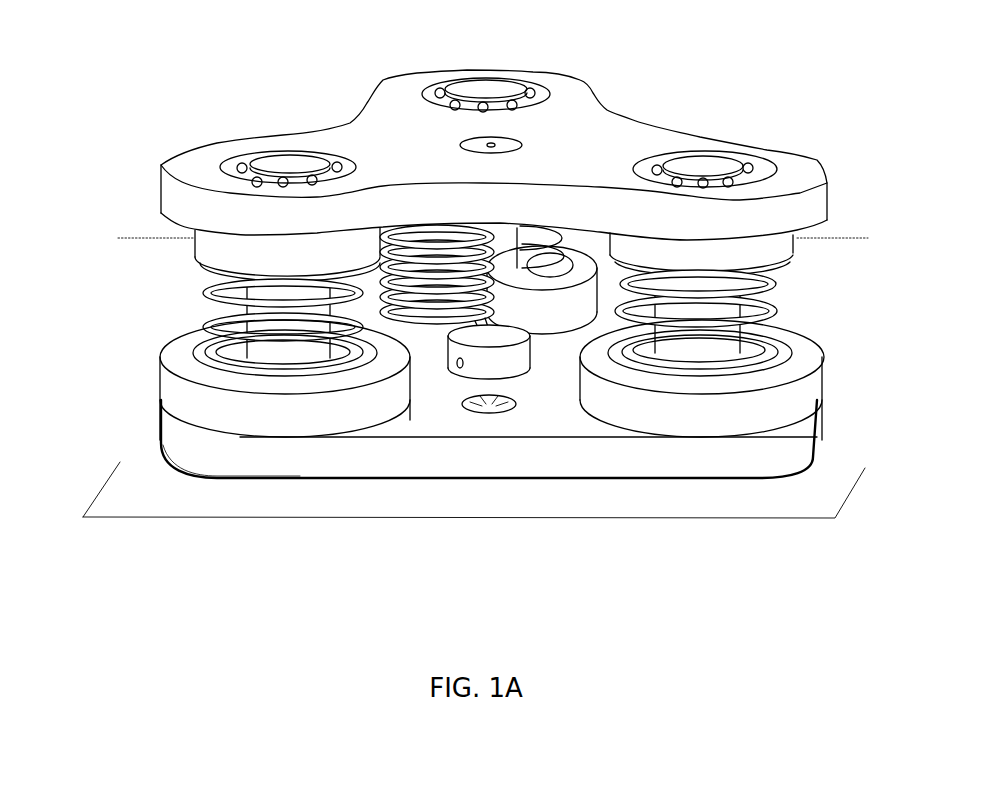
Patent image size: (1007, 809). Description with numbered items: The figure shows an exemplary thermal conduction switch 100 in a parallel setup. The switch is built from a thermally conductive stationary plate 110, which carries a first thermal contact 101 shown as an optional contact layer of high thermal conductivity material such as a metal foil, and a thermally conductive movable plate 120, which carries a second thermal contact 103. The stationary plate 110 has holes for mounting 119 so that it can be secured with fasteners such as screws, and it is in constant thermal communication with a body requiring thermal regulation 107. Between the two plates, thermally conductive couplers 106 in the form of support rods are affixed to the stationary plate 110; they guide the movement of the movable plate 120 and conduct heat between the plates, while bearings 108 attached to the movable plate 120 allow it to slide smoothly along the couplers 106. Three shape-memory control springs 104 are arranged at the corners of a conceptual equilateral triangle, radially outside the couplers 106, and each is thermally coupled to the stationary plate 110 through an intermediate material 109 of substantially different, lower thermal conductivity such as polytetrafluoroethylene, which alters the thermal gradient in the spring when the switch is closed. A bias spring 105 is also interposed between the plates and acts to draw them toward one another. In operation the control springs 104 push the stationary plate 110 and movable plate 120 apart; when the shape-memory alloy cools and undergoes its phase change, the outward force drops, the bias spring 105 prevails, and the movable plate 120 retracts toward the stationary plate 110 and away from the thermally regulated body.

The thermal conduction switch 100 is at (203, 78).
The first thermal contact 101 is at (382, 480).
The second thermal contact 103 is at (565, 120).
The SM control spring 104 is at (203, 323).
The bias spring 105 is at (430, 317).
The thermally conductive coupler 106 is at (722, 334).
The body requiring thermal regulation 107 is at (628, 498).
The bearings 108 is at (242, 168).
The intermediate material 109 is at (802, 397).
The stationary plate 110 is at (298, 463).
The holes for mounting 119 is at (490, 407).
The movable plate 120 is at (567, 203).